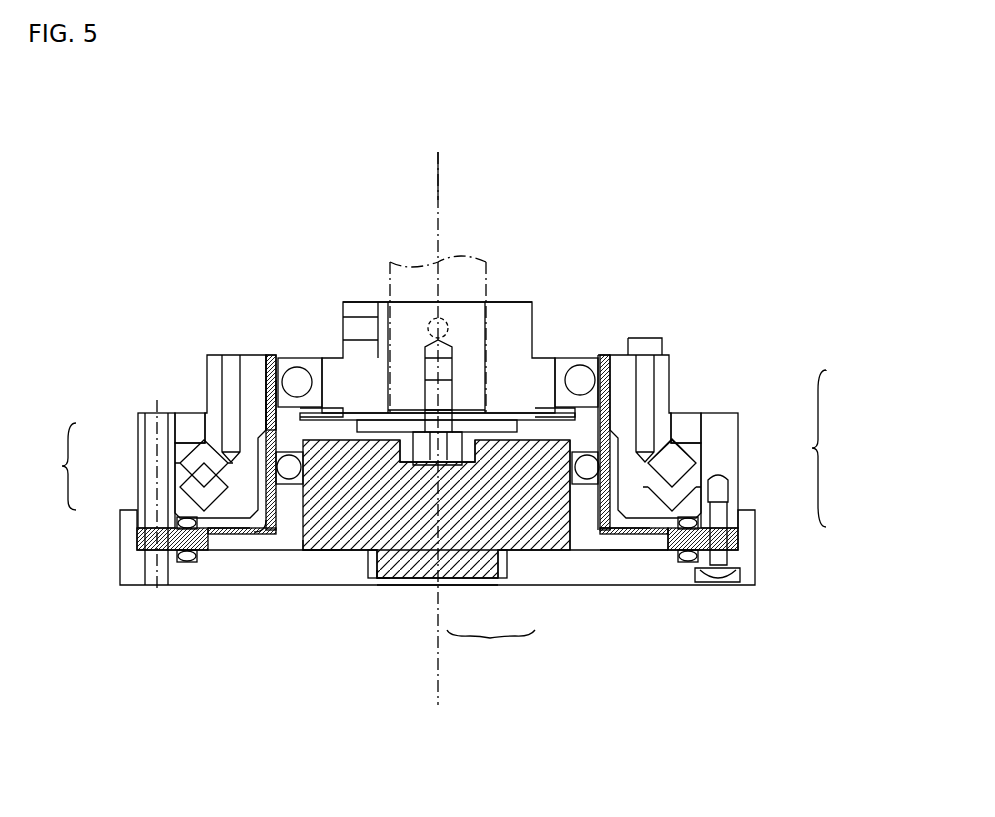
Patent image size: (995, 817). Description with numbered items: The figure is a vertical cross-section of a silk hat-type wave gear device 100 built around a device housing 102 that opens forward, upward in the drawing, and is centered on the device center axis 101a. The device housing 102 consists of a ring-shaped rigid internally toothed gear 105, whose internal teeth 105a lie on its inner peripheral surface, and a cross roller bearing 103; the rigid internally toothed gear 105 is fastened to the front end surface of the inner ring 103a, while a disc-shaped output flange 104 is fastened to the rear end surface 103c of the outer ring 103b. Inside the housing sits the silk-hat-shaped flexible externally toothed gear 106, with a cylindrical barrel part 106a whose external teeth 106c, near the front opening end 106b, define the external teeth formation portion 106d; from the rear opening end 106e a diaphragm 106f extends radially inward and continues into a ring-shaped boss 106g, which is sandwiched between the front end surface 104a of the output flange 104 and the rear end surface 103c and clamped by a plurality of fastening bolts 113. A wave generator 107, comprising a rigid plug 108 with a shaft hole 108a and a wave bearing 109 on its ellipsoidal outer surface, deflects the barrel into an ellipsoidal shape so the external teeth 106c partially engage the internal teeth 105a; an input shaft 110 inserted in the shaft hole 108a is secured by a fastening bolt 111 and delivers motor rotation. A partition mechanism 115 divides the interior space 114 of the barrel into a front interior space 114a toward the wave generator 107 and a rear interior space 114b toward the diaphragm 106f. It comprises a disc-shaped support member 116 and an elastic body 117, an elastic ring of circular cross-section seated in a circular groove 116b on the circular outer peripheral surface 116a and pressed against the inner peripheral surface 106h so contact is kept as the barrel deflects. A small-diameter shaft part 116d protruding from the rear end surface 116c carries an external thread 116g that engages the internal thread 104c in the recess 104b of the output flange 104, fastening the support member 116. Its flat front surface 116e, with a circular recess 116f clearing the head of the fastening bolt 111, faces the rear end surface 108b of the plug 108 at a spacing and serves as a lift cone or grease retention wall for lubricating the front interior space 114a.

The silk hat-type wave gear device 100 is at (747, 215).
The device center axis 101a is at (438, 168).
The device housing 102 is at (843, 413).
The cross roller bearing 103 is at (745, 443).
The inner ring 103a is at (674, 440).
The outer ring 103b is at (728, 465).
The rear end surface 103c is at (688, 562).
The output flange 104 is at (758, 552).
The front end surface 104a is at (640, 560).
The recess 104b is at (385, 586).
The internal thread 104c is at (366, 552).
The rigid internally toothed gear 105 is at (678, 375).
The internal teeth 105a is at (597, 445).
The flexible externally toothed gear 106 is at (602, 555).
The cylindrical barrel part 106a is at (200, 438).
The front opening end 106b is at (272, 402).
The external teeth 106c is at (267, 388).
The external teeth formation portion 106d is at (272, 355).
The rear opening end 106e is at (277, 530).
The diaphragm 106f is at (232, 533).
The boss 106g is at (181, 562).
The inner peripheral surface 106h is at (592, 538).
The wave generator 107 is at (536, 308).
The plug 108 is at (511, 302).
The shaft hole 108a is at (428, 367).
The rear end surface 108b is at (582, 377).
The wave bearing 109 is at (598, 356).
The input shaft 110 is at (480, 247).
The fastening bolt 111 is at (421, 345).
The fastening bolts 113 is at (720, 584).
The interior space 114 is at (119, 496).
The front interior space 114a is at (297, 434).
The rear interior space 114b is at (290, 507).
The partition mechanism 115 is at (491, 644).
The support member 116 is at (532, 545).
The circular outer peripheral surface 116a is at (600, 462).
The circular groove 116b is at (580, 465).
The rear end surface 116c is at (322, 550).
The small-diameter shaft part 116d is at (420, 578).
The front surface 116e is at (340, 437).
The circular recess 116f is at (407, 437).
The external thread 116g is at (378, 575).
The elastic body 117 is at (478, 560).